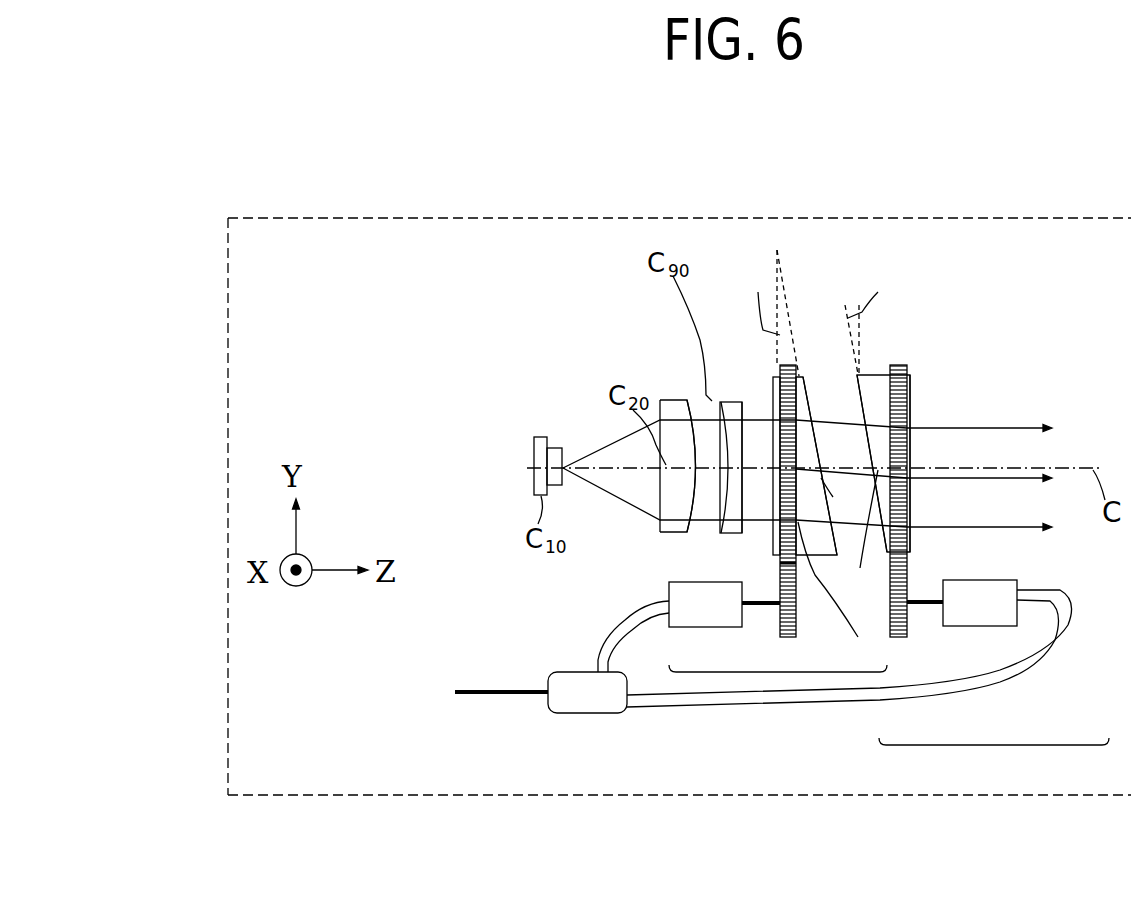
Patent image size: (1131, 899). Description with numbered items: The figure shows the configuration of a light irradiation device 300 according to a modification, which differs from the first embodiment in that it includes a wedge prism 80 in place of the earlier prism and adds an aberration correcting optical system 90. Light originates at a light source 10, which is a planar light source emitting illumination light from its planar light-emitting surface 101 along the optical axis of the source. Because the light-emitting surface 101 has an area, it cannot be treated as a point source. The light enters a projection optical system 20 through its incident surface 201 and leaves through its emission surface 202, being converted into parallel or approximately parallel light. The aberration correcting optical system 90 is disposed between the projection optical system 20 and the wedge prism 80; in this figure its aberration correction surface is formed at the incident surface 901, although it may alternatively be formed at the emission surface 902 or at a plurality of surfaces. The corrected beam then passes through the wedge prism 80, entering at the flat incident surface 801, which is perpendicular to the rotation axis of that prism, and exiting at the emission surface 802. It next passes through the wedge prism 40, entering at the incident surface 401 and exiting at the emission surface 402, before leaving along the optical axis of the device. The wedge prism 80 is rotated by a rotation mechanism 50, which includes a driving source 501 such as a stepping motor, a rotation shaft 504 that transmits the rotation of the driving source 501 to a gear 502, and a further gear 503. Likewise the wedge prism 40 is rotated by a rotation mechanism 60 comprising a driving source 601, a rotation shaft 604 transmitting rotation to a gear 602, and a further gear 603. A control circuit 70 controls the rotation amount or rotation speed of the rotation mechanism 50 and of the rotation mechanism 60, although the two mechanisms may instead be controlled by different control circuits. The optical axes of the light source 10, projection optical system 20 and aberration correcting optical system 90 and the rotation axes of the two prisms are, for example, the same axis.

The light irradiation device 300 is at (227, 353).
The light source 10 is at (529, 419).
The light-emitting surface 101 is at (560, 448).
The projection optical system 20 is at (634, 423).
The incident surface 201 is at (660, 492).
The emission surface 202 is at (688, 398).
The aberration correcting optical system 90 is at (658, 423).
The incident surface 901 is at (721, 533).
The emission surface 902 is at (746, 400).
The wedge prism 80 is at (786, 411).
The incident surface 801 is at (775, 555).
The emission surface 802 is at (821, 392).
The wedge prism 40 is at (914, 431).
The incident surface 401 is at (868, 446).
The emission surface 402 is at (915, 398).
The rotation mechanism 50 is at (778, 574).
The driving source 501 is at (705, 585).
The gear 502 is at (797, 618).
The gear 503 is at (839, 596).
The rotation shaft 504 is at (760, 604).
The rotation mechanism 60 is at (868, 575).
The driving source 601 is at (989, 620).
The gear 602 is at (900, 638).
The gear 603 is at (908, 542).
The rotation shaft 604 is at (924, 605).
The control circuit 70 is at (556, 672).